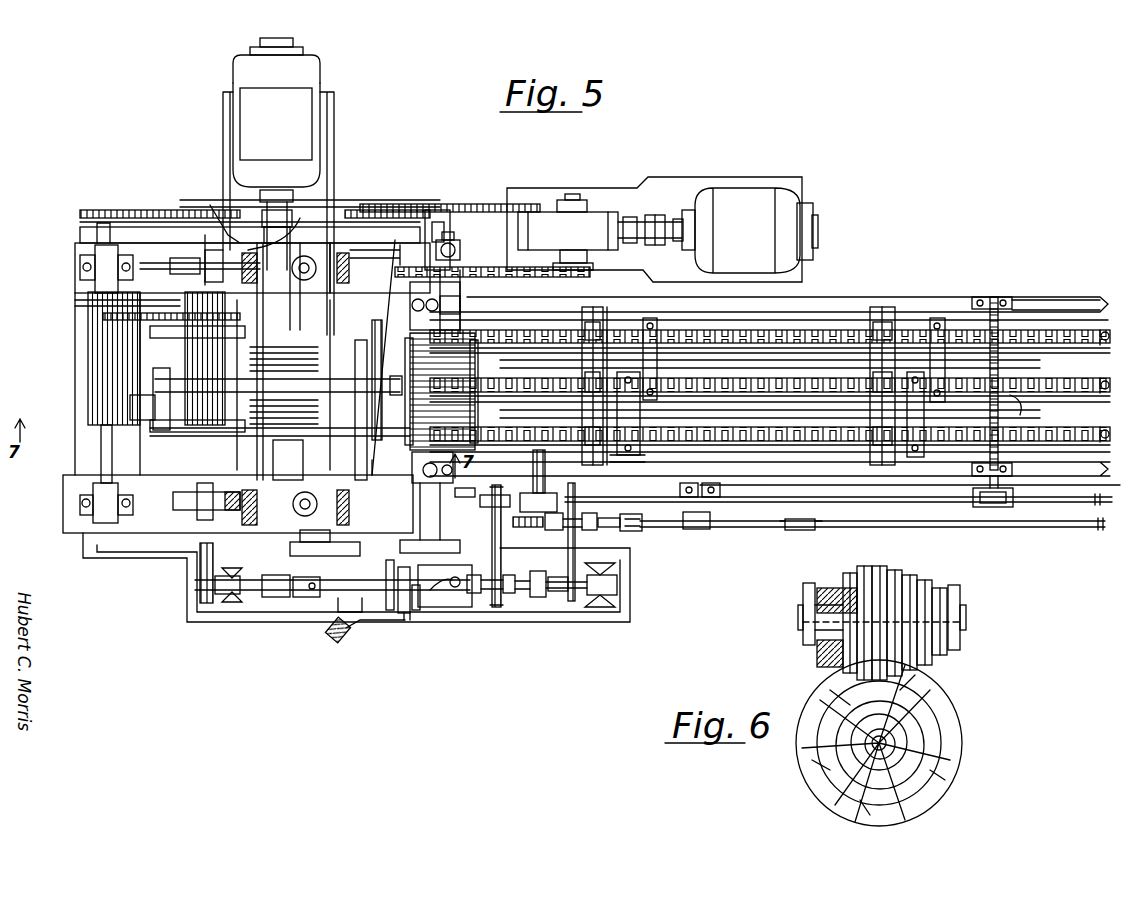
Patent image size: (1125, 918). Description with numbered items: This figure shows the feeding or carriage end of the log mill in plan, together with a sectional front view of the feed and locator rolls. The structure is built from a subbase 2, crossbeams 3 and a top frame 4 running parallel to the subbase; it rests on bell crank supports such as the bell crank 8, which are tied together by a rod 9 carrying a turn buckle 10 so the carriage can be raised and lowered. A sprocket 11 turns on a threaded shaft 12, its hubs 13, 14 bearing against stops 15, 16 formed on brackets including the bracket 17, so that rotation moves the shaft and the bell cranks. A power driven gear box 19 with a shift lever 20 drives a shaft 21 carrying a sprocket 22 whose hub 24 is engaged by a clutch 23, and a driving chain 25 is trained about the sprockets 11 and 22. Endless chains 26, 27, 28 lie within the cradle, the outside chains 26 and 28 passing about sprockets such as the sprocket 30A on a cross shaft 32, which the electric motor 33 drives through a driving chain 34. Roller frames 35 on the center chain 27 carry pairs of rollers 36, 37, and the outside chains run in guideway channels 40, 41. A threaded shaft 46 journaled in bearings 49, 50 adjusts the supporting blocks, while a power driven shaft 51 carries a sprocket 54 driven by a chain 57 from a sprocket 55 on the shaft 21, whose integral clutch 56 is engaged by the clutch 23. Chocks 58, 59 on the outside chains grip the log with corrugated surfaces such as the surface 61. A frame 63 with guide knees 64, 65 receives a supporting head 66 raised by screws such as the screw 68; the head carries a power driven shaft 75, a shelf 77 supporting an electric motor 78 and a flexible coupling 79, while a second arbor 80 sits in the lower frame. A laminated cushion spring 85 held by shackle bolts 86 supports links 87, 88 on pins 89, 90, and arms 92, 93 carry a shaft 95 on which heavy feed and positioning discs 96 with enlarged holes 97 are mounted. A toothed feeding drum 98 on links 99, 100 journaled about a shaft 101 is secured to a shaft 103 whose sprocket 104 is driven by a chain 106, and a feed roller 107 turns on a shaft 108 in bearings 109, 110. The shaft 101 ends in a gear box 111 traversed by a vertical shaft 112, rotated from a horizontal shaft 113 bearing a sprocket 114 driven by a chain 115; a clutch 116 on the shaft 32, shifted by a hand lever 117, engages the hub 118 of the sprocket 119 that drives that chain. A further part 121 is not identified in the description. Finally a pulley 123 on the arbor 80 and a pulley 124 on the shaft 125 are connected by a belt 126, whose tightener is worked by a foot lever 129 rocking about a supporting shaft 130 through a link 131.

In FIG. 5, the subbase 2 is at (845, 297).
In FIG. 5, the crossbeams 3 is at (770, 308).
In FIG. 5, the top frame 4 is at (1085, 325).
In FIG. 5, the bell crank support 8 is at (710, 520).
In FIG. 5, the rod 9 is at (740, 527).
In FIG. 5, the turn buckle 10 is at (805, 530).
In FIG. 5, the sprocket 11 is at (585, 498).
In FIG. 5, the threaded shaft 12 is at (620, 500).
In FIG. 5, the hub 13 is at (568, 530).
In FIG. 5, the hub 14 is at (578, 532).
In FIG. 5, the stop 15 is at (598, 528).
In FIG. 5, the stop 16 is at (552, 530).
In FIG. 5, the bracket 17 is at (600, 530).
In FIG. 5, the power driven gear box 19 is at (470, 608).
In FIG. 5, the shift lever 20 is at (452, 607).
In FIG. 5, the shaft 21 is at (243, 595).
In FIG. 5, the sprocket 22 is at (585, 618).
In FIG. 5, the clutch 23 is at (548, 620).
In FIG. 5, the hub 24 is at (562, 605).
In FIG. 5, the driving chain 25 is at (618, 580).
In FIG. 5, the endless chain 26 is at (780, 433).
In FIG. 5, the center chain 27 is at (795, 383).
In FIG. 5, the endless chain 28 is at (808, 330).
In FIG. 5, the sprocket 30A is at (475, 492).
In FIG. 5, the cross shaft 32 is at (432, 496).
In FIG. 5, the electric motor 33 is at (745, 195).
In FIG. 5, the driving chain 34 is at (462, 266).
In FIG. 5, the roller frame 35 is at (610, 335).
In FIG. 5, the roller 36 is at (600, 312).
In FIG. 5, the roller 37 is at (622, 462).
In FIG. 5, the guideway channel 40 is at (1030, 325).
In FIG. 5, the guideway channel 41 is at (1040, 478).
In FIG. 6, the guideway channel 41 is at (880, 572).
In FIG. 5, the threaded shaft 46 is at (796, 381).
In FIG. 5, the bearing 49 is at (1003, 507).
In FIG. 5, the bearing 50 is at (1000, 297).
In FIG. 5, the power driven shaft 51 is at (820, 505).
In FIG. 5, the sprocket 54 is at (490, 505).
In FIG. 5, the sprocket 55 is at (495, 608).
In FIG. 5, the clutch 56 is at (510, 530).
In FIG. 5, the chain 57 is at (480, 530).
In FIG. 5, the chock 58 is at (642, 420).
In FIG. 5, the chock 59 is at (657, 365).
In FIG. 5, the corrugated surface 61 is at (312, 492).
In FIG. 5, the frame 63 is at (365, 245).
In FIG. 5, the guide knee 64 is at (343, 258).
In FIG. 5, the guide knee 65 is at (237, 235).
In FIG. 5, the supporting head 66 is at (332, 322).
In FIG. 5, the power driven screw 68 is at (316, 262).
In FIG. 5, the power driven shaft 75 is at (302, 246).
In FIG. 5, the shelf 77 is at (332, 142).
In FIG. 5, the electric motor 78 is at (300, 125).
In FIG. 5, the flexible coupling 79 is at (283, 236).
In FIG. 5, the second arbor 80 is at (300, 552).
In FIG. 5, the cushion spring 85 is at (345, 372).
In FIG. 5, the shackle bolts 86 is at (368, 392).
In FIG. 5, the link 87 is at (89, 384).
In FIG. 5, the link 88 is at (378, 456).
In FIG. 5, the pin 89 is at (150, 398).
In FIG. 5, the pin 90 is at (380, 410).
In FIG. 5, the arm 92 is at (408, 322).
In FIG. 6, the arm 92 is at (960, 600).
In FIG. 5, the arm 93 is at (391, 471).
In FIG. 6, the arm 93 is at (803, 614).
In FIG. 6, the shaft 95 is at (966, 618).
In FIG. 5, the feed and positioning discs 96 is at (495, 340).
In FIG. 6, the hole 97 is at (828, 648).
In FIG. 5, the feeding drum 98 is at (105, 372).
In FIG. 5, the supporting link 99 is at (240, 318).
In FIG. 5, the supporting link 100 is at (275, 318).
In FIG. 5, the supporting shaft 101 is at (212, 284).
In FIG. 5, the shaft 103 is at (160, 425).
In FIG. 5, the sprocket 104 is at (100, 348).
In FIG. 5, the chain 106 is at (90, 305).
In FIG. 5, the feed roller 107 is at (150, 418).
In FIG. 5, the shaft 108 is at (95, 262).
In FIG. 5, the bearing 109 is at (80, 272).
In FIG. 5, the bearing 110 is at (80, 503).
In FIG. 5, the gear box 111 is at (203, 232).
In FIG. 5, the shaft 112 is at (225, 208).
In FIG. 5, the shaft 113 is at (195, 486).
In FIG. 5, the sprocket 114 is at (212, 208).
In FIG. 5, the chain 115 is at (420, 200).
In FIG. 5, the clutch 116 is at (455, 248).
In FIG. 5, the hand lever 117 is at (340, 612).
In FIG. 5, the hub 118 is at (455, 207).
In FIG. 5, the sprocket 119 is at (460, 212).
In FIG. 5, the bracket 121 is at (350, 590).
In FIG. 5, the pulley 123 is at (300, 560).
In FIG. 5, the pulley 124 is at (392, 612).
In FIG. 5, the shaft 125 is at (425, 612).
In FIG. 5, the belt 126 is at (325, 565).
In FIG. 5, the foot lever 129 is at (352, 642).
In FIG. 5, the supporting shaft 130 is at (442, 610).
In FIG. 5, the link 131 is at (412, 615).